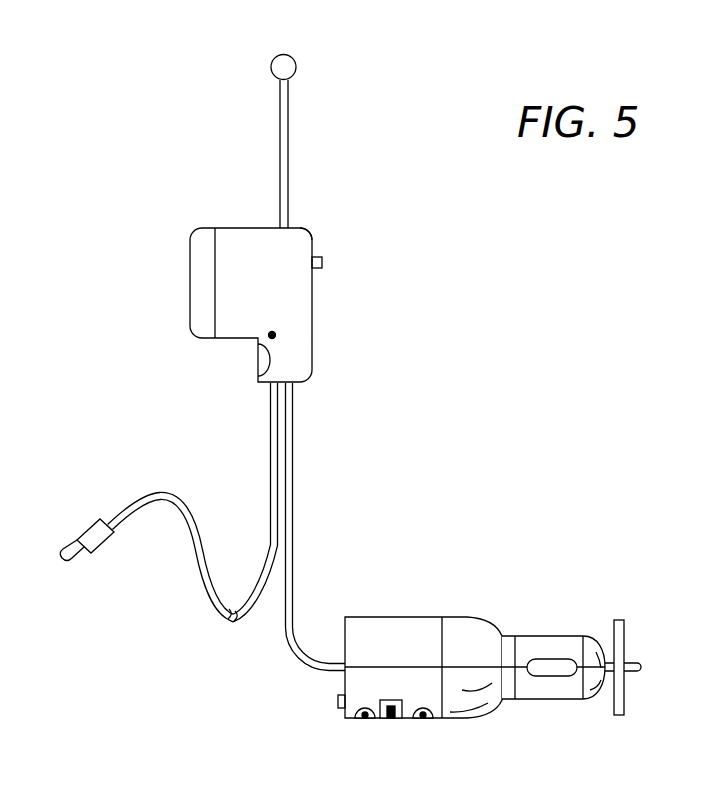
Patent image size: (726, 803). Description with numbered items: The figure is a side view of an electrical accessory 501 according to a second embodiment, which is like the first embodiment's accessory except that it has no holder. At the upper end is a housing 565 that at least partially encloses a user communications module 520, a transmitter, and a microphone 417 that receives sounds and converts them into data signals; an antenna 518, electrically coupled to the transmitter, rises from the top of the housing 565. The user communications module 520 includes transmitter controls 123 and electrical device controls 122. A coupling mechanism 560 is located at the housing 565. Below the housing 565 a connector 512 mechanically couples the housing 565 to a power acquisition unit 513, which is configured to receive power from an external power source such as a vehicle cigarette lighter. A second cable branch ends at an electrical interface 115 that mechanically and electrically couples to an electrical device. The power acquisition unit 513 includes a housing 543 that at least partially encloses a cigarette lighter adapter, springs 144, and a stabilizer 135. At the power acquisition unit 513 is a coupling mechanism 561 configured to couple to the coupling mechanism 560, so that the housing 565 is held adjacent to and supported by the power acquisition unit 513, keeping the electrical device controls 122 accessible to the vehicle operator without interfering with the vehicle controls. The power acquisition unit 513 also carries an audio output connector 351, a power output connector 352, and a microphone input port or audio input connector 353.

The electrical accessory 501 is at (573, 231).
The antenna 518 is at (271, 64).
The housing 565 is at (300, 242).
The coupling mechanism 560 is at (322, 262).
The transmitter controls 123 is at (197, 283).
The microphone 417 is at (275, 335).
The electrical device controls 122 is at (267, 360).
The user communications module 520 is at (197, 353).
The connector 512 is at (295, 475).
The electrical interface 115 is at (84, 528).
The power acquisition unit 513 is at (473, 630).
The coupling mechanism 561 is at (338, 705).
The audio output connector 351 is at (365, 720).
The power output connector 352 is at (391, 720).
The audio input connector 353 is at (424, 720).
The housing 543 is at (558, 636).
The springs 144 is at (552, 677).
The stabilizer 135 is at (620, 630).